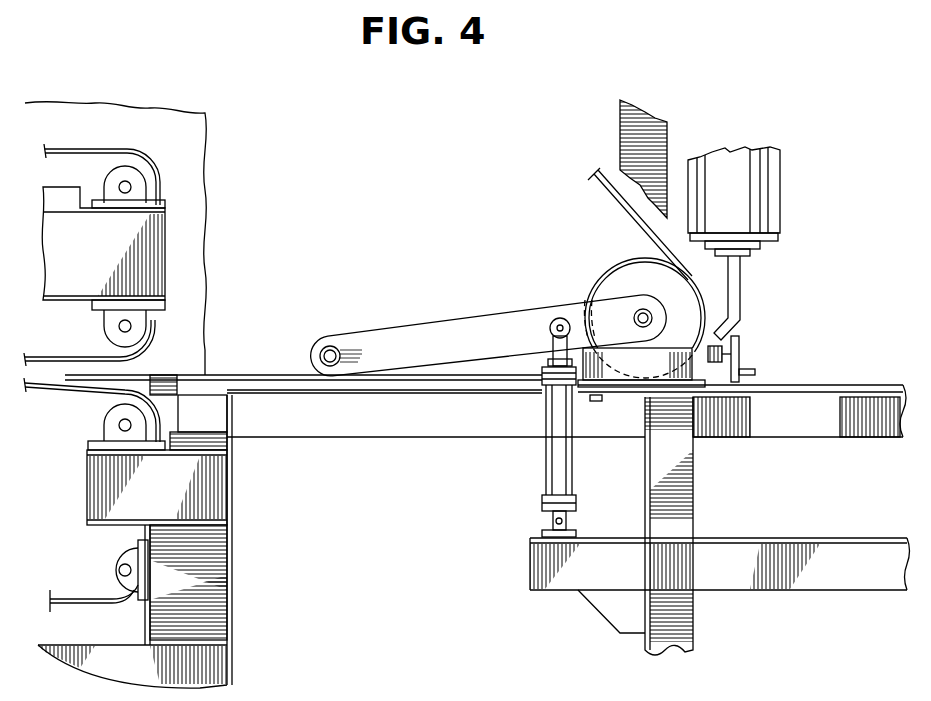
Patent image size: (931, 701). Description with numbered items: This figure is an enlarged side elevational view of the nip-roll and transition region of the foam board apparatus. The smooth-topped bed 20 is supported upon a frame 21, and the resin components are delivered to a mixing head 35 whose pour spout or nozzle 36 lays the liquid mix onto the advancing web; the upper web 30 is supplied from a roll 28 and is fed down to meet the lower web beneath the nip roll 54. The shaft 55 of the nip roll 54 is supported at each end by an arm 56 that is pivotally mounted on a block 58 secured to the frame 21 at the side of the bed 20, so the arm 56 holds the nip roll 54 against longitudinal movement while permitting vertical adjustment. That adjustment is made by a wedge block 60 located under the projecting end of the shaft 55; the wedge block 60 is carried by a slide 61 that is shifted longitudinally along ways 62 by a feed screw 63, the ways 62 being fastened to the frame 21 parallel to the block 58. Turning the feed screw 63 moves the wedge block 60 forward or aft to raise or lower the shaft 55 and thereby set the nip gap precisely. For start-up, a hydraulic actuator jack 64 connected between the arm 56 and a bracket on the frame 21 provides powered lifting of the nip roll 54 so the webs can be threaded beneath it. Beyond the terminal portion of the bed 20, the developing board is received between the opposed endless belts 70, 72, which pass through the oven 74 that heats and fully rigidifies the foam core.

The bed 20 is at (808, 398).
The frame 21 is at (808, 428).
The roll 28 is at (648, 132).
The upper web 30 is at (622, 208).
The mixing head 35 is at (726, 170).
The pour spout or nozzle 36 is at (748, 265).
The nip roll 54 is at (628, 275).
The shaft 55 is at (648, 308).
The arm 56 is at (463, 330).
The block 58 is at (316, 372).
The wedge block 60 is at (675, 340).
The slide 61 is at (602, 319).
The ways 62 is at (583, 308).
The feed screw 63 is at (745, 375).
The hydraulic actuator jack 64 is at (557, 460).
The endless belt 70 is at (68, 150).
The endless belt 72 is at (52, 392).
The oven 74 is at (190, 150).